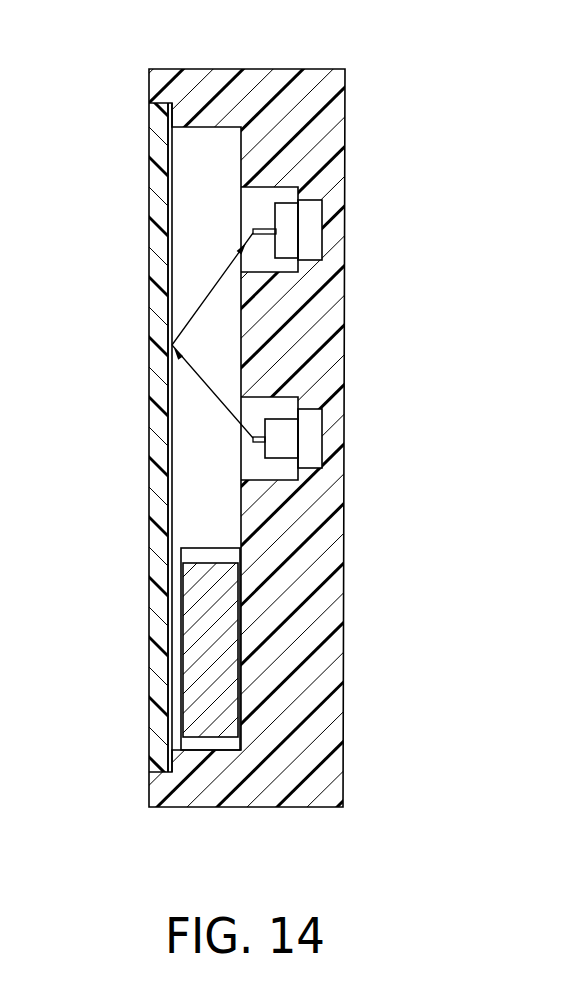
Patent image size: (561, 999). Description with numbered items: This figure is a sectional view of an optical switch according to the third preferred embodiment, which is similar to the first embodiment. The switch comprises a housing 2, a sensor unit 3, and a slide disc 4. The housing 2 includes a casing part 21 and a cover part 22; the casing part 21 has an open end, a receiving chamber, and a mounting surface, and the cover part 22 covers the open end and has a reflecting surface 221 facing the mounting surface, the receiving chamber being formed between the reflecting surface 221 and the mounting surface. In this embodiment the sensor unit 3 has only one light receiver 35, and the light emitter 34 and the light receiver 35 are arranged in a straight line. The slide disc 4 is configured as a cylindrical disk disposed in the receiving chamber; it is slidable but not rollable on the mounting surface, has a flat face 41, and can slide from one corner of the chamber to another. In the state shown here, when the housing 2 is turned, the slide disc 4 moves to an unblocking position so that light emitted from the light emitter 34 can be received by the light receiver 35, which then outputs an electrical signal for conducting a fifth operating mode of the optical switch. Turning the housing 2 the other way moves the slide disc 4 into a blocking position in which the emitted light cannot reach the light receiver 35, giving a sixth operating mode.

The housing 2 is at (360, 300).
The casing part 21 is at (346, 488).
The cover part 22 is at (150, 322).
The reflecting surface 221 is at (176, 503).
The sensor unit 3 is at (299, 245).
The light emitter 34 is at (283, 438).
The light receiver 35 is at (287, 232).
The slide disc 4 is at (168, 662).
The flat face 41 is at (242, 604).